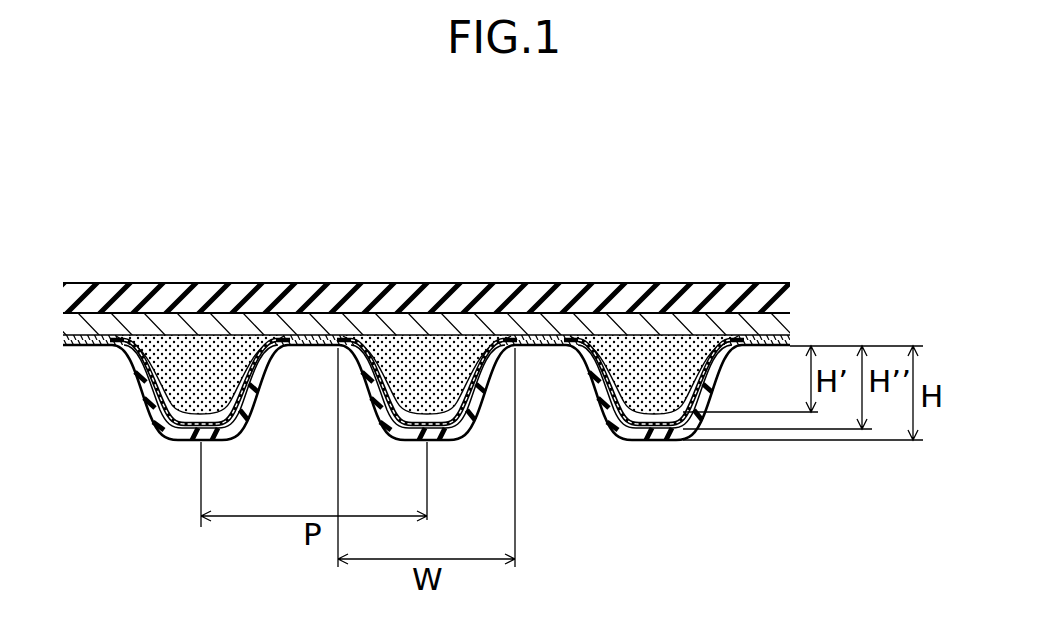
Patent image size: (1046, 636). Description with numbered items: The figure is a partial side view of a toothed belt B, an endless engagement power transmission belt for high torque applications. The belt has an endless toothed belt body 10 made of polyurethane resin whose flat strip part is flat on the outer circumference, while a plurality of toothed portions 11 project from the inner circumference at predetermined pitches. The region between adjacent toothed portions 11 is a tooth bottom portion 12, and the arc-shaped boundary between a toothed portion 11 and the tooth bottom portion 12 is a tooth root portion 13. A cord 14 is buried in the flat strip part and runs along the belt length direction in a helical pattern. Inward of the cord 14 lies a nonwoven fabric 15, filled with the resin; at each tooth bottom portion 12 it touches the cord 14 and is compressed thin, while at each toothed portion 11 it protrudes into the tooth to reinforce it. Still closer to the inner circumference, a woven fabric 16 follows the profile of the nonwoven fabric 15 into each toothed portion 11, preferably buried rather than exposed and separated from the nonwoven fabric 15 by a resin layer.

The toothed belt body 10 is at (273, 292).
The cord 14 is at (640, 326).
The tooth bottom portion 12 is at (315, 350).
The tooth root portion 13 is at (119, 350).
The toothed portion 11 is at (193, 442).
The nonwoven fabric 15 is at (640, 390).
The woven fabric 16 is at (236, 406).
The toothed belt B is at (449, 235).